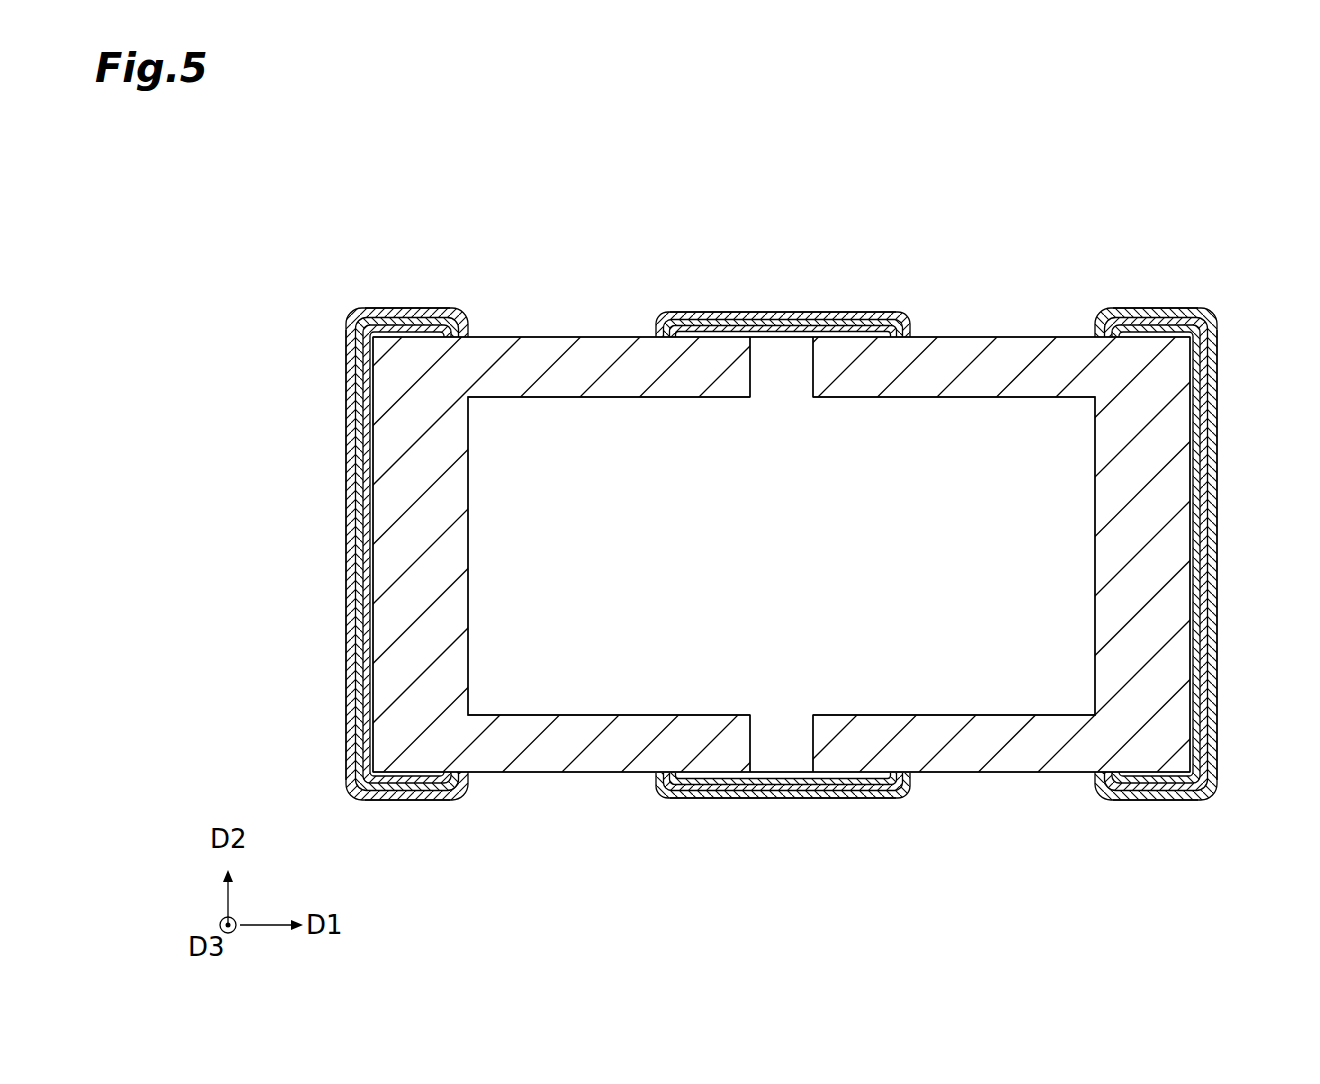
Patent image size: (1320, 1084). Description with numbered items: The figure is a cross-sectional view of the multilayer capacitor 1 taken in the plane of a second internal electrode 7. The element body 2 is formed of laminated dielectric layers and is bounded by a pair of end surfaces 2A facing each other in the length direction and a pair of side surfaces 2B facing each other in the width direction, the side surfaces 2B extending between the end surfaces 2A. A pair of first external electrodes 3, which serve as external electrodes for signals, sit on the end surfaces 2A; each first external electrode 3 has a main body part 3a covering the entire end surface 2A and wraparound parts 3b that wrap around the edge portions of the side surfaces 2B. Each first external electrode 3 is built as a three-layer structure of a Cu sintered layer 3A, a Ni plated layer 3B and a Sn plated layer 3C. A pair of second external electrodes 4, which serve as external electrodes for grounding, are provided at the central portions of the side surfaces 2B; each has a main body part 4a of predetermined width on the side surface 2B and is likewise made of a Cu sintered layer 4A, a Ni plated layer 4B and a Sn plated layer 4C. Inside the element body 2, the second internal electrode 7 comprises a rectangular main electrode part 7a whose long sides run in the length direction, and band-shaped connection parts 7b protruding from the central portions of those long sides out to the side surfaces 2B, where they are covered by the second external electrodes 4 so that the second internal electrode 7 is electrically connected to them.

The multilayer capacitor 1 is at (343, 180).
The element body 2 is at (660, 545).
The end surface 2A is at (372, 618).
The side surface 2B is at (602, 334).
The first external electrode 3 is at (784, 558).
The main body part 3a is at (352, 572).
The wraparound part 3b is at (420, 306).
The Cu sintered layer 3A is at (360, 670).
The Ni plated layer 3B is at (352, 700).
The Sn plated layer 3C is at (345, 732).
The second external electrode 4 is at (777, 559).
The main body part 4a is at (718, 311).
The Cu sintered layer 4A is at (790, 311).
The Ni plated layer 4B is at (841, 311).
The Sn plated layer 4C is at (892, 311).
The second internal electrode 7 is at (931, 378).
The main electrode part 7a is at (922, 630).
The connection part 7b is at (785, 352).